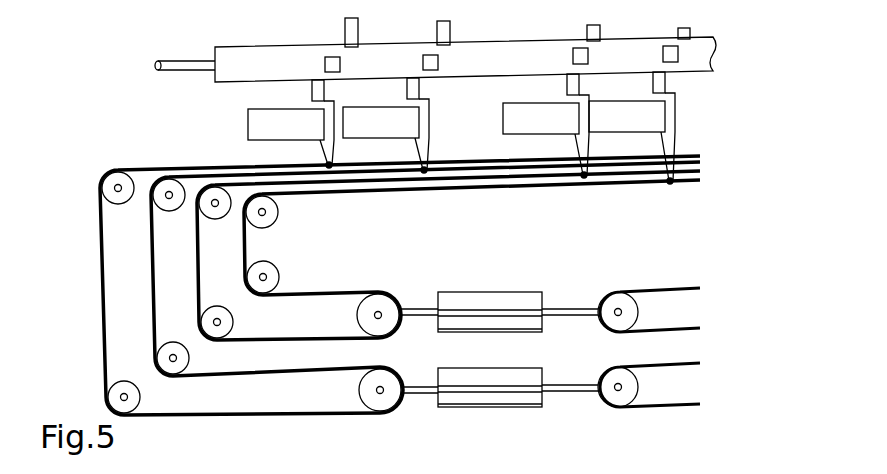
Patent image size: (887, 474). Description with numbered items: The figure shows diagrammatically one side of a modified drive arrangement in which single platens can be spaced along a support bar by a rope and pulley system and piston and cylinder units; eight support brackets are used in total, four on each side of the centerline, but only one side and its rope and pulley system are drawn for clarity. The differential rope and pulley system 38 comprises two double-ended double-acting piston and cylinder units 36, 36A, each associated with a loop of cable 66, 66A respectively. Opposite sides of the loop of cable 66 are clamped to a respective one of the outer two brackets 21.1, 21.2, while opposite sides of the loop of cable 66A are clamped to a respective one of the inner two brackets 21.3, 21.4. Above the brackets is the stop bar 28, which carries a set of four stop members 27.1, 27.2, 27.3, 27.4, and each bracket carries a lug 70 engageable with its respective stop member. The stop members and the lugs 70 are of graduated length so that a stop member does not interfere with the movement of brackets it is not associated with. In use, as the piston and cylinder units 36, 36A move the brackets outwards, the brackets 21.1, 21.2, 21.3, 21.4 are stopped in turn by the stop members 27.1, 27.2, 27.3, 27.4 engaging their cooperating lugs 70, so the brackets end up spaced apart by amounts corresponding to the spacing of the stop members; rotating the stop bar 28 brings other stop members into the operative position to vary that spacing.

The stop bar 28 is at (473, 43).
The stop member 27.1 is at (312, 97).
The stop member 27.2 is at (407, 97).
The stop member 27.3 is at (567, 88).
The stop member 27.4 is at (653, 88).
The lug 70 is at (336, 103).
The support bracket 21.1 is at (255, 131).
The support bracket 21.2 is at (420, 131).
The support bracket 21.3 is at (520, 130).
The support bracket 21.4 is at (654, 142).
The differential rope and pulley system 38 is at (92, 262).
The loop of cable 66 is at (152, 287).
The loop of cable 66A is at (244, 249).
The double-ended double-acting piston and cylinder unit 36 is at (501, 405).
The double-ended double-acting piston and cylinder unit 36A is at (475, 292).